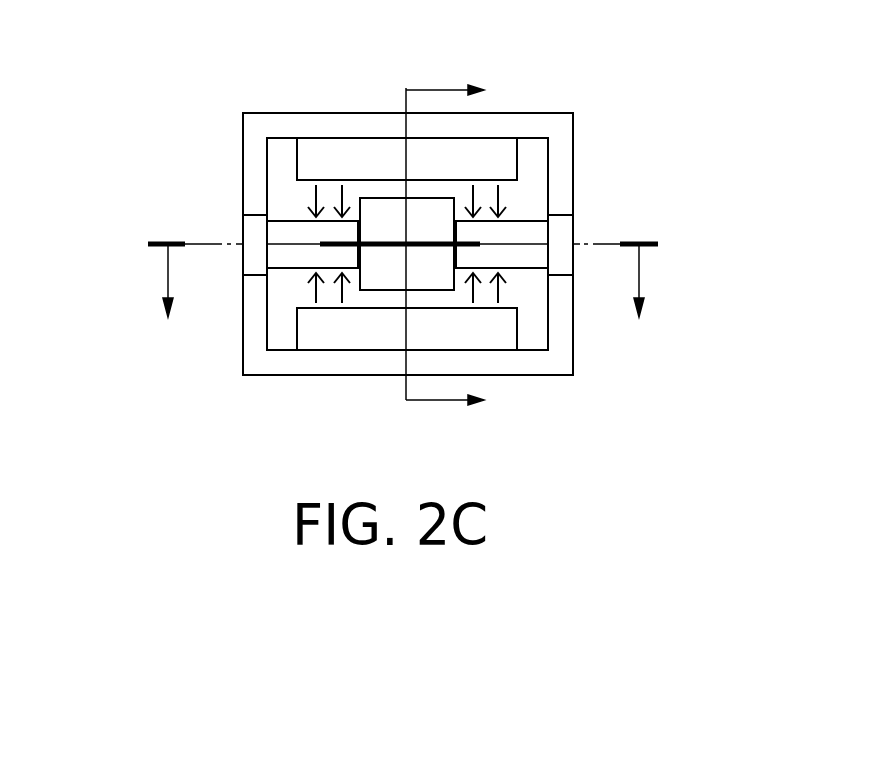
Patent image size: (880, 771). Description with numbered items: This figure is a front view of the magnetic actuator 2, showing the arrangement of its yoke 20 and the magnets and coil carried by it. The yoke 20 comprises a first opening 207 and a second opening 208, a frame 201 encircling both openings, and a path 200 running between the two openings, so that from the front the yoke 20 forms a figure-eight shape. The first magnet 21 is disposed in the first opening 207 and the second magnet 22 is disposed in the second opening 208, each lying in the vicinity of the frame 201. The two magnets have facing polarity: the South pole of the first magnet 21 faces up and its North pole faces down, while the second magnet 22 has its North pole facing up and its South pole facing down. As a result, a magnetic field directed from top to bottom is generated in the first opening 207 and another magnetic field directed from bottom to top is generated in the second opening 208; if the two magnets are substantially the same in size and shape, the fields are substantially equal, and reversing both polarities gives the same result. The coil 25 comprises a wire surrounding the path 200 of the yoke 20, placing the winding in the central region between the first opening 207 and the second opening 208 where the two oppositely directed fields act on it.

The magnetic actuator 2 is at (447, 30).
The yoke 20 is at (285, 113).
The first magnet 21 is at (490, 153).
The second magnet 22 is at (480, 338).
The coil 25 is at (385, 212).
The path 200 is at (283, 232).
The frame 201 is at (563, 185).
The first opening 207 is at (527, 193).
The second opening 208 is at (527, 288).